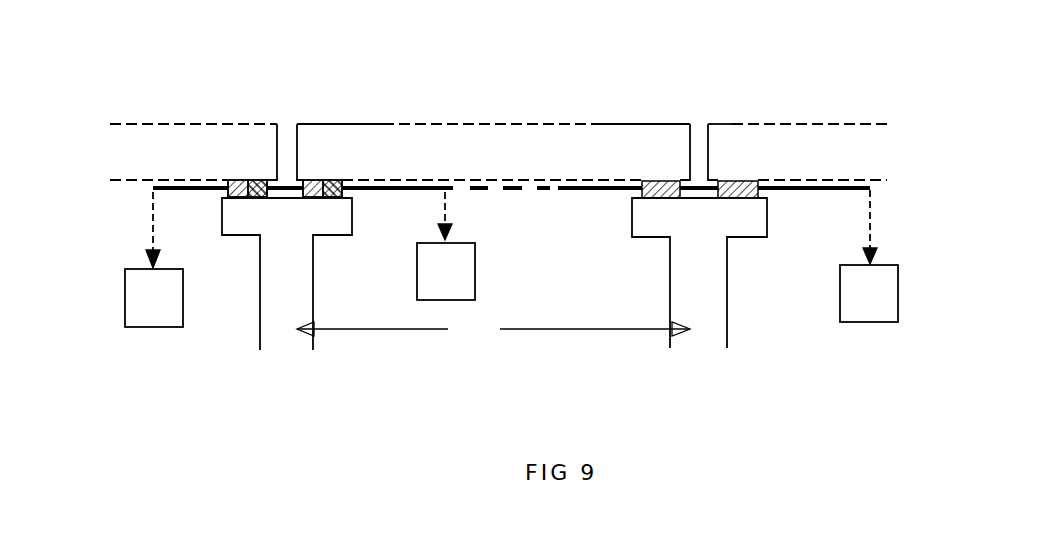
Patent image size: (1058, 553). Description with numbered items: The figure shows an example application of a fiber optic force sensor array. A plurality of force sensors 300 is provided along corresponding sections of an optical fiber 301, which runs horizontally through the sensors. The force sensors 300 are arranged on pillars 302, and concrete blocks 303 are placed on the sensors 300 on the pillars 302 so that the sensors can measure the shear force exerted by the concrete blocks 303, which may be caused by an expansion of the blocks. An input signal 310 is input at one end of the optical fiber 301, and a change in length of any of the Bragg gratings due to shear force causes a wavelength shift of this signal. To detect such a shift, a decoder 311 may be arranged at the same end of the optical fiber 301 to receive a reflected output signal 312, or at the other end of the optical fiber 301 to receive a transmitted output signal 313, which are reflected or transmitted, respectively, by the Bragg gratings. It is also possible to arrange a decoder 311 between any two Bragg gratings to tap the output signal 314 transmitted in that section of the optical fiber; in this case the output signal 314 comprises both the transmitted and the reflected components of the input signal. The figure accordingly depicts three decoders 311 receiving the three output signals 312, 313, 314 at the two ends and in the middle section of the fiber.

The force sensor 300 is at (255, 198).
The optical fiber 301 is at (613, 184).
The pillar 302 is at (493, 330).
The concrete block 303 is at (369, 141).
The input signal 310 is at (134, 188).
The decoder 311 is at (152, 327).
The reflected output signal 312 is at (135, 230).
The transmitted output signal 313 is at (889, 227).
The output signal 314 is at (463, 216).